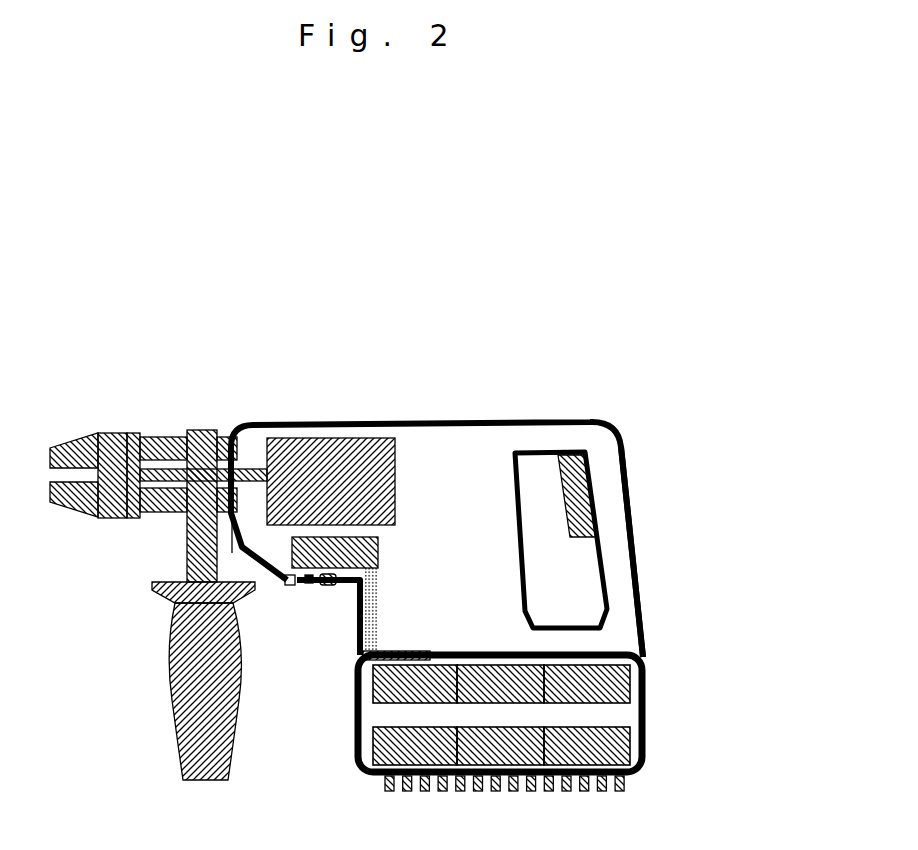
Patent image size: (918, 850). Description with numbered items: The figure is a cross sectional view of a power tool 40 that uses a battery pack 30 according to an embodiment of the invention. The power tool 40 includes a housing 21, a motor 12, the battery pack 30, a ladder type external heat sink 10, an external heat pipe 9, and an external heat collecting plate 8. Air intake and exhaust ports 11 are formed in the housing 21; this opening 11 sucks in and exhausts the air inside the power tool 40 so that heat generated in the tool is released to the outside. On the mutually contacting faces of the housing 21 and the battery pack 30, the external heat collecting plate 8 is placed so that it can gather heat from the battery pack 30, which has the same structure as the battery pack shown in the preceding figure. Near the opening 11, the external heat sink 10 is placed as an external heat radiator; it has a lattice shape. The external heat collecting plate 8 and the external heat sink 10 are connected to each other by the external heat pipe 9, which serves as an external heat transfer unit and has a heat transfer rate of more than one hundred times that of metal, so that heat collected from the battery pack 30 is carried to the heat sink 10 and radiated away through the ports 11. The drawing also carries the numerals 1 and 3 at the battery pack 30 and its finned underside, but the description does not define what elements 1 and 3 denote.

The power tool 1 is at (641, 765).
The heat radiating fins 3 is at (383, 790).
The external heat collecting plate 8 is at (368, 657).
The external heat pipe 9 is at (360, 610).
The external heat sink 10 is at (292, 553).
The air intake and exhaust ports 11 is at (287, 583).
The motor 12 is at (354, 439).
The housing 21 is at (632, 500).
The battery pack 30 is at (652, 704).
The power tool 40 is at (463, 418).